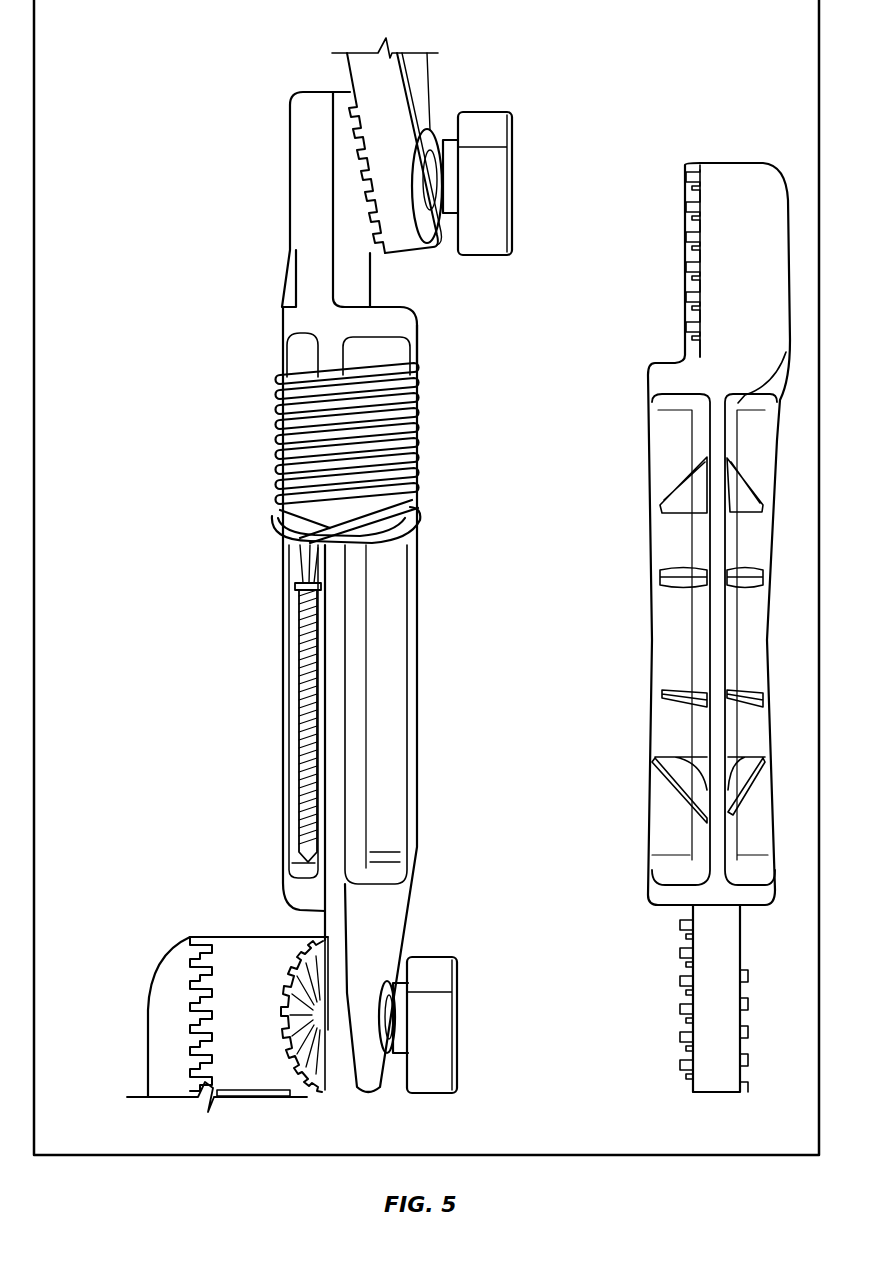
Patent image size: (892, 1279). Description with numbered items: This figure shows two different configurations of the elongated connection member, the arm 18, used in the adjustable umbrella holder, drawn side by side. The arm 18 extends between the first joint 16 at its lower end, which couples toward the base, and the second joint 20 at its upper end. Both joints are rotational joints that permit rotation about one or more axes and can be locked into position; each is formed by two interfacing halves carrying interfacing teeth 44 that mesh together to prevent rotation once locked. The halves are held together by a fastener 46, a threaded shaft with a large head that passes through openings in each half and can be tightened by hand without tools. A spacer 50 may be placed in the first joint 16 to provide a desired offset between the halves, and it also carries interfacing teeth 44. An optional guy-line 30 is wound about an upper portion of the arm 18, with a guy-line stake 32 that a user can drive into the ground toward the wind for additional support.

The first joint 16 is at (139, 1032).
The arm 18 is at (402, 700).
The second joint 20 is at (271, 196).
The guy-line 30 is at (278, 412).
The guy-line stake 32 is at (305, 655).
The interfacing teeth 44 is at (310, 937).
The fastener 46 is at (505, 231).
The spacer 50 is at (267, 947).